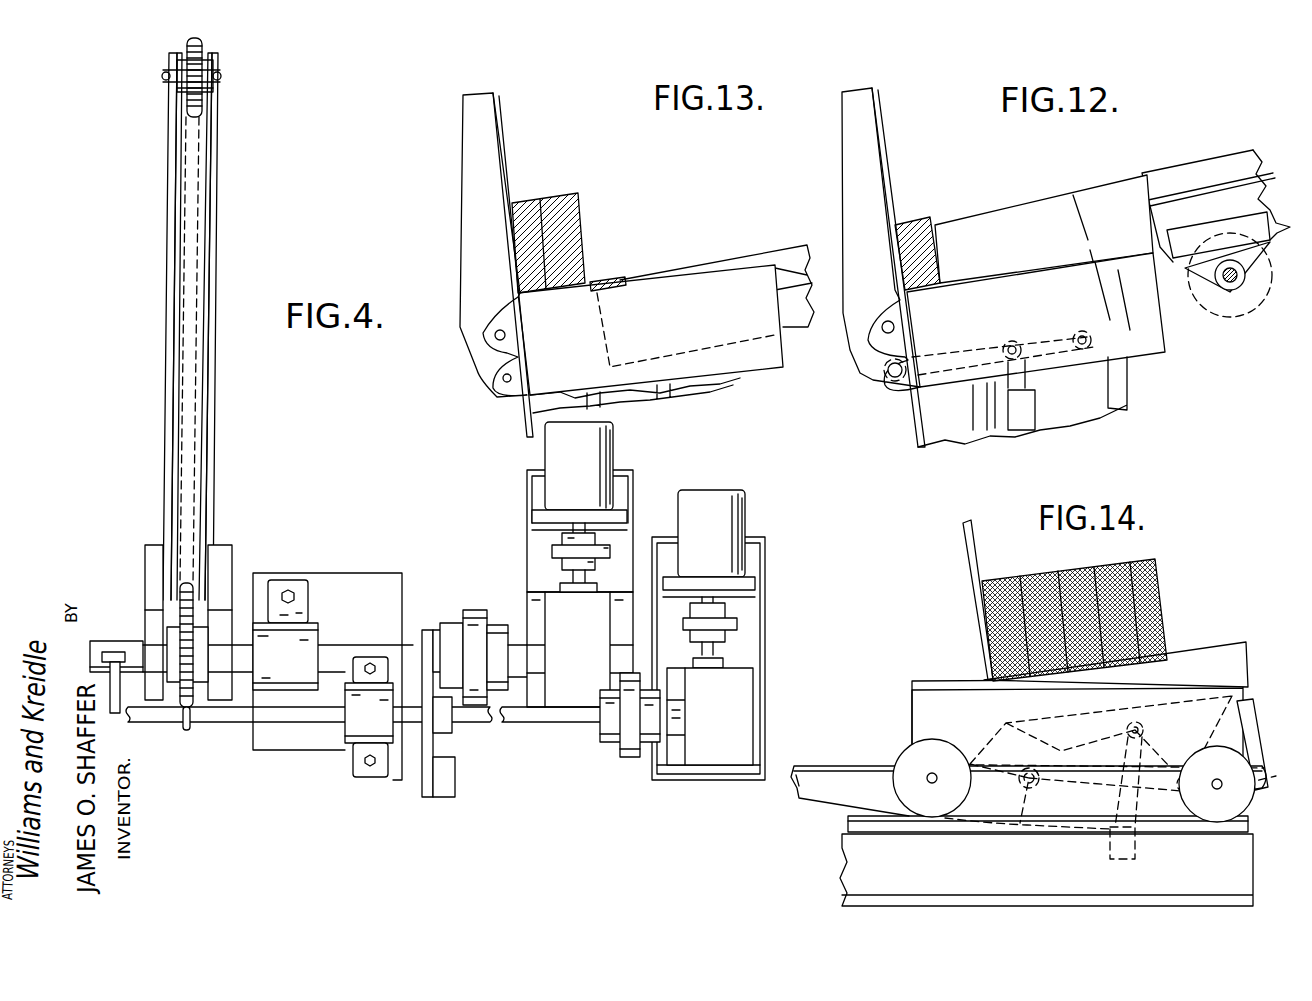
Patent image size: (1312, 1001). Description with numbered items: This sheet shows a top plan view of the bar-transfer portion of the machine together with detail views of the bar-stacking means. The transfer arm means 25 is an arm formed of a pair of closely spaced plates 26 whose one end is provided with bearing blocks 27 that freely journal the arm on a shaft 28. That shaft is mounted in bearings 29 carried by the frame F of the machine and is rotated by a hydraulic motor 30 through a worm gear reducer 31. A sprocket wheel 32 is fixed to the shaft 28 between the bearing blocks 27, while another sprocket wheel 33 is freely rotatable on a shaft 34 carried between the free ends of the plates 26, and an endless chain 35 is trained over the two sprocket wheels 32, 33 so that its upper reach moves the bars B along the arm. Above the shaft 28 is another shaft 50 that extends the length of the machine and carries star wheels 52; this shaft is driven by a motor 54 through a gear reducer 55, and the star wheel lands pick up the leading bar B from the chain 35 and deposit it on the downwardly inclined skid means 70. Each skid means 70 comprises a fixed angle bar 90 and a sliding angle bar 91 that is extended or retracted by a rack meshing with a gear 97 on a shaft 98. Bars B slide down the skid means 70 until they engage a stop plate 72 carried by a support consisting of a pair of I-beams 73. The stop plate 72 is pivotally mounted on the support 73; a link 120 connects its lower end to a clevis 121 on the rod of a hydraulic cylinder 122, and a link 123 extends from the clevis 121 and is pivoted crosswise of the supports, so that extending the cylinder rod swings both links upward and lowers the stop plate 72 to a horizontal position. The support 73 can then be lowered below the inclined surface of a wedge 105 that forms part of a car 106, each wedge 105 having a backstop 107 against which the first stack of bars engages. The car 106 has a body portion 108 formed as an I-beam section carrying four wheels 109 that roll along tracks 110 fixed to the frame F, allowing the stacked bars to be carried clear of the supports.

In FIG. 4, the transfer arm means 25 is at (230, 199).
In FIG. 4, the plates 26 is at (214, 238).
In FIG. 4, the bearing blocks 27 is at (148, 556).
In FIG. 4, the shaft 28 is at (122, 650).
In FIG. 4, the bearings 29 is at (305, 633).
In FIG. 4, the motor 30 is at (598, 452).
In FIG. 4, the worm gear reducer 31 is at (552, 604).
In FIG. 4, the sprocket wheel 32 is at (188, 735).
In FIG. 4, the sprocket wheel 33 is at (200, 47).
In FIG. 4, the shaft 34 is at (216, 80).
In FIG. 4, the endless chain 35 is at (197, 397).
In FIG. 4, the shaft 50 is at (565, 723).
In FIG. 4, the star wheel 52 is at (440, 788).
In FIG. 4, the motor 54 is at (735, 500).
In FIG. 4, the gear reducer 55 is at (105, 648).
In FIG. 13, the skid means 70 is at (785, 240).
In FIG. 12, the skid means 70 is at (1167, 160).
In FIG. 13, the stop plate 72 is at (495, 122).
In FIG. 12, the stop plate 72 is at (878, 117).
In FIG. 14, the stop plate 72 is at (817, 764).
In FIG. 13, the I-beams 73 is at (679, 290).
In FIG. 12, the angle bar 90 is at (1222, 160).
In FIG. 12, the angle bar 91 is at (1038, 206).
In FIG. 12, the gear 97 is at (1224, 303).
In FIG. 12, the shaft 98 is at (1236, 284).
In FIG. 14, the wedge 105 is at (1219, 647).
In FIG. 14, the car 106 is at (927, 668).
In FIG. 13, the backstop 107 is at (529, 422).
In FIG. 12, the backstop 107 is at (898, 267).
In FIG. 14, the backstop 107 is at (963, 574).
In FIG. 12, the body portion 108 is at (1022, 402).
In FIG. 14, the body portion 108 is at (912, 697).
In FIG. 14, the wheels 109 is at (934, 758).
In FIG. 14, the tracks 110 is at (848, 826).
In FIG. 12, the link 120 is at (948, 352).
In FIG. 14, the link 120 is at (1010, 745).
In FIG. 12, the clevis 121 is at (1022, 376).
In FIG. 12, the hydraulic cylinder 122 is at (1036, 432).
In FIG. 14, the hydraulic cylinder 122 is at (1110, 855).
In FIG. 12, the link 123 is at (1047, 340).
In FIG. 14, the link 123 is at (1164, 748).
In FIG. 13, the bar B is at (552, 190).
In FIG. 12, the bar B is at (908, 224).
In FIG. 14, the bar B is at (1067, 566).
In FIG. 4, the frame F is at (414, 600).
In FIG. 14, the frame F is at (834, 882).